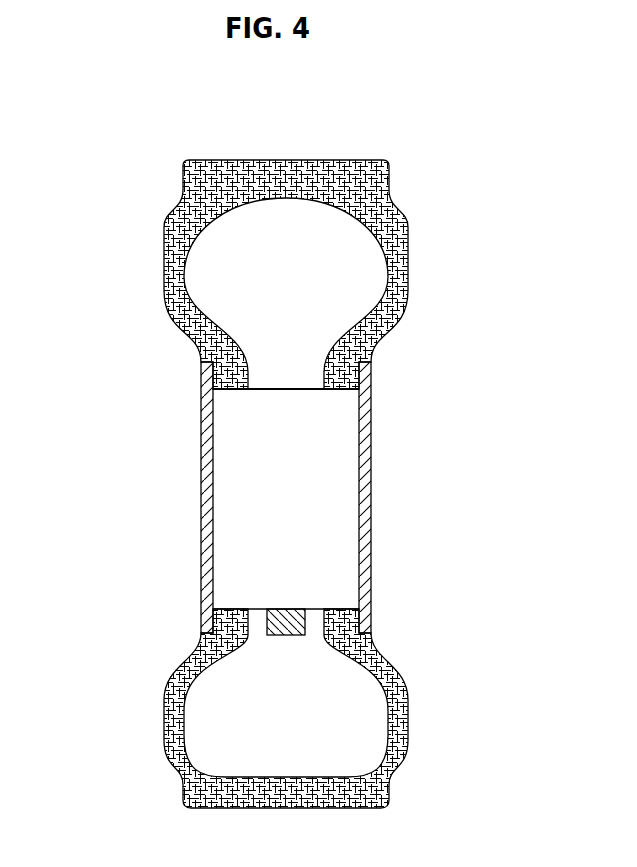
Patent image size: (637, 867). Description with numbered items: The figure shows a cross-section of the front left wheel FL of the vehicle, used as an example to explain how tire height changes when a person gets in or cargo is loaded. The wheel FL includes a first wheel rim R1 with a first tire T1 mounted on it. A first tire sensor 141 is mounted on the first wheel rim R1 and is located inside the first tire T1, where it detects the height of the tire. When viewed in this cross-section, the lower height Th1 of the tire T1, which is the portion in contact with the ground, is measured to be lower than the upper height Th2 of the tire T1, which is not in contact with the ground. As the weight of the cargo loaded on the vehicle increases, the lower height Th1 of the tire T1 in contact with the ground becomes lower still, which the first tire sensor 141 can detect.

The front left wheel FL is at (156, 169).
The first tire T1 is at (408, 253).
The first wheel rim R1 is at (368, 487).
The first tire sensor 141 is at (285, 616).
The lower height of the tire Th1 is at (286, 636).
The upper height of the tire Th2 is at (286, 388).